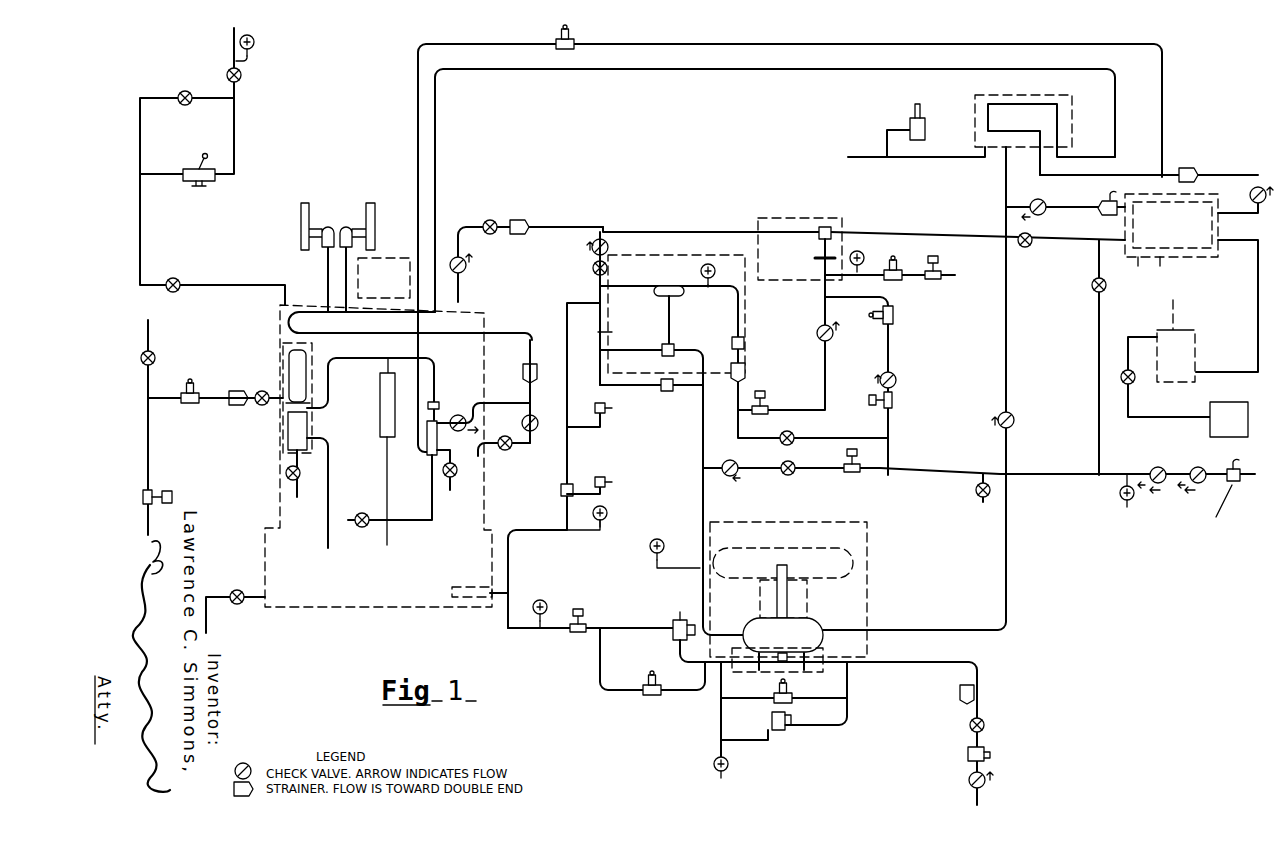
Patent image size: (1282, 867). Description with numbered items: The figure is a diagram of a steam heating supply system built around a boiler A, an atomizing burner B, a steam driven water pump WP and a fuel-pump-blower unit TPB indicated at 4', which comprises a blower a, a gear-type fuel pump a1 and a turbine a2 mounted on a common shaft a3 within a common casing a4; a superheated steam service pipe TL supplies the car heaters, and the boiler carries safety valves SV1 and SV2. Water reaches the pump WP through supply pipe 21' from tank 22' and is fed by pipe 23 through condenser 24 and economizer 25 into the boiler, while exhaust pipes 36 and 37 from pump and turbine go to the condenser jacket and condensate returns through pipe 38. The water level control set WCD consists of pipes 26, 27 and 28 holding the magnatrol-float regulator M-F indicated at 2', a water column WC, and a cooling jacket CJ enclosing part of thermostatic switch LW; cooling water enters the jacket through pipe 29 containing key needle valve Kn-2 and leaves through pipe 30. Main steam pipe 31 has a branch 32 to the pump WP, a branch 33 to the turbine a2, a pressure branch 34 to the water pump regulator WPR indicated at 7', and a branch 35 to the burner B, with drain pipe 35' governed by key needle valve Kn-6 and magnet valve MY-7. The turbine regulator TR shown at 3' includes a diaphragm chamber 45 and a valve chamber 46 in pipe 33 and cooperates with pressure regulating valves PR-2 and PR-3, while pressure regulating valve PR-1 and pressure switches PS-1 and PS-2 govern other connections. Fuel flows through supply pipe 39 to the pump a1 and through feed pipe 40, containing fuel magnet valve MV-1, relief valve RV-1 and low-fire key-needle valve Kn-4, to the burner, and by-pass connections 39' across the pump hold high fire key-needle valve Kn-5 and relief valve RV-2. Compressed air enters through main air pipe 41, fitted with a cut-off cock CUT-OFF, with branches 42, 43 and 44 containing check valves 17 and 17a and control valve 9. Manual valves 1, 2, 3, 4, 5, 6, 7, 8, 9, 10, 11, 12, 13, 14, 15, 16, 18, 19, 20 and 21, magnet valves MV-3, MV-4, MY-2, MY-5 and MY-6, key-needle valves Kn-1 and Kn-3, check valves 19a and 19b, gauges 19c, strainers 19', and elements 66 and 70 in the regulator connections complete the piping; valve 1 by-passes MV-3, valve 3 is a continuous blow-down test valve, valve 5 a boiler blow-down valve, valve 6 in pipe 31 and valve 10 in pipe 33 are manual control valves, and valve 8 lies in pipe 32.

The emergency valve 1 is at (186, 92).
The manual valve 2 is at (177, 275).
The continuous blow-down test valve 3 is at (199, 427).
The manual valve 4 is at (244, 75).
The boiler blow-down valve 5 is at (240, 591).
The manually operable control valve 6 is at (492, 220).
The manual valve 7 is at (454, 470).
The control valve 8 is at (1028, 247).
The control valve 9 is at (1106, 286).
The manually operable control valve 10 is at (592, 269).
The manual valve 11 is at (298, 482).
The manual valve 12 is at (503, 451).
The manual valve 13 is at (362, 528).
The manual valve 14 is at (794, 438).
The manual valve 15 is at (976, 494).
The manual valve 16 is at (986, 724).
The check valve 17 is at (894, 380).
The check valve 17a is at (834, 335).
The manual valve 18 is at (1134, 382).
The manual valve 19 is at (861, 487).
The strainer 19' is at (712, 452).
The check valve 19a is at (609, 247).
The check valve 19b is at (466, 268).
The gauge 19c is at (255, 43).
The manual valve 20 is at (789, 475).
The manual valve 21 is at (254, 388).
The supply pipe 21' is at (1191, 372).
The tank 22' is at (1229, 432).
The feed pipe 23 is at (767, 72).
The condenser 24 is at (1060, 126).
The economizer 25 is at (378, 308).
The pipe 26 is at (330, 500).
The pipe 27 is at (388, 498).
The pipe 28 is at (437, 508).
The pipe 29 is at (789, 46).
The pipe 30 is at (505, 410).
The main steam supply pipe 31 is at (578, 226).
The feed branch 32 is at (724, 231).
The feed branch 33 is at (599, 310).
The pressure supply branch 34 is at (823, 312).
The feed branch 35 is at (573, 465).
The drain pipe 35' is at (905, 269).
The exhaust pipe 36 is at (1072, 207).
The exhaust pipe 37 is at (1010, 365).
The pipe 38 is at (853, 162).
The fuel supply pipe 39 is at (908, 674).
The pipe 39' is at (868, 703).
The atomizing fuel feed pipe 40 is at (630, 622).
The main air supply pipe 41 is at (1066, 480).
The branch pipe 42 is at (893, 358).
The branch pipe 43 is at (736, 322).
The branch pipe 44 is at (1093, 311).
The diaphragm chamber 45 is at (669, 285).
The valve chamber 46 is at (667, 358).
The orifice 66 is at (812, 262).
The fitting 70 is at (830, 226).
The boiler A is at (272, 322).
The atomizing burner B is at (522, 588).
The superheated steam service pipe TL is at (237, 128).
The fuel magnet valve MV-1 is at (590, 600).
The magnet valve MV-3 is at (197, 160).
The magnet valve MV-4 is at (172, 489).
The magnet valve MY-2 is at (853, 476).
The magnet valve MY-5 is at (904, 401).
The magnet valve MY-6 is at (767, 401).
The magnet valve MY-7 is at (940, 268).
The safety valve SV1 is at (328, 225).
The safety valve SV2 is at (350, 225).
The continuous blow-down key-needle valve Kn-1 is at (188, 382).
The key needle valve Kn-2 is at (573, 41).
The key-needle valve Kn-3 is at (903, 314).
The low-fire key-needle valve Kn-4 is at (652, 697).
The high fire key-needle valve Kn-5 is at (778, 691).
The key needle valve Kn-6 is at (897, 281).
The water column WC is at (380, 384).
The set of control devices WCD is at (361, 427).
The thermostatic switch LW is at (440, 400).
The cooling jacket CJ is at (438, 440).
The magnatrol-float boiler water regulator M-F is at (290, 360).
The magnatrol-float boiler water regulator 2' is at (272, 398).
The turbine regulator 3' is at (676, 304).
The fuel-pump-blower unit 4' is at (803, 589).
The water pump regulator 7' is at (800, 236).
The turbine regulator TR is at (666, 316).
The pressure regulating valve PR-1 is at (560, 490).
The pressure regulating valve PR-2 is at (676, 397).
The pressure regulating control valve PR-3 is at (744, 343).
The pressure switch PS-1 is at (608, 485).
The pressure switch PS-2 is at (603, 413).
The fuel-pump-blower unit TPB is at (783, 552).
The blower a is at (822, 553).
The gear-type pump a1 is at (825, 653).
The turbine a2 is at (806, 626).
The common shaft a3 is at (790, 598).
The common casing a4 is at (760, 593).
The relief valve RV-1 is at (680, 620).
The pump protecting relief valve RV-2 is at (782, 731).
The water pump WP is at (1218, 228).
The water pressure regulator WPR is at (822, 251).
The cut-off cock CUT-OFF is at (1188, 494).